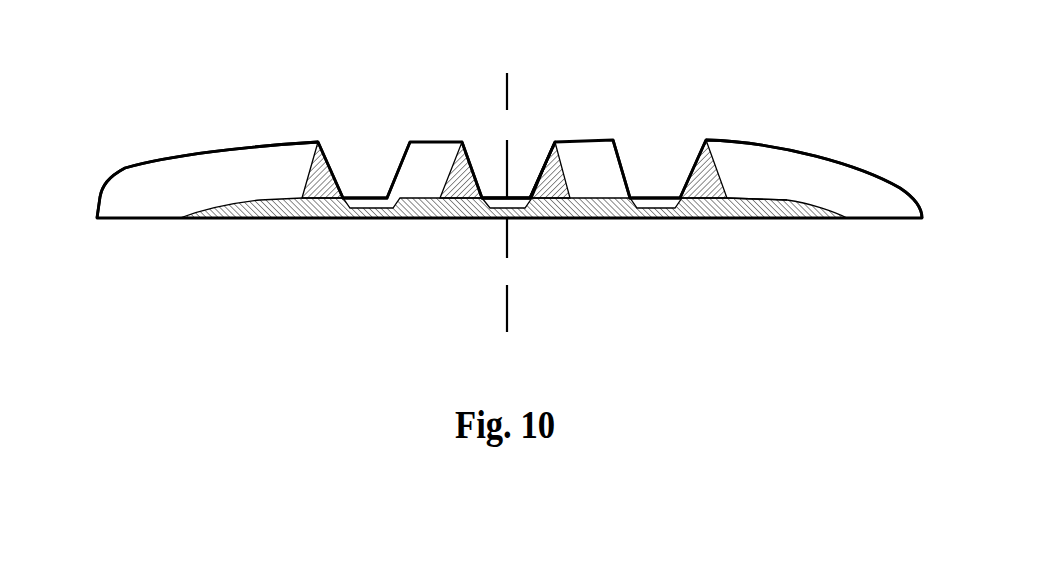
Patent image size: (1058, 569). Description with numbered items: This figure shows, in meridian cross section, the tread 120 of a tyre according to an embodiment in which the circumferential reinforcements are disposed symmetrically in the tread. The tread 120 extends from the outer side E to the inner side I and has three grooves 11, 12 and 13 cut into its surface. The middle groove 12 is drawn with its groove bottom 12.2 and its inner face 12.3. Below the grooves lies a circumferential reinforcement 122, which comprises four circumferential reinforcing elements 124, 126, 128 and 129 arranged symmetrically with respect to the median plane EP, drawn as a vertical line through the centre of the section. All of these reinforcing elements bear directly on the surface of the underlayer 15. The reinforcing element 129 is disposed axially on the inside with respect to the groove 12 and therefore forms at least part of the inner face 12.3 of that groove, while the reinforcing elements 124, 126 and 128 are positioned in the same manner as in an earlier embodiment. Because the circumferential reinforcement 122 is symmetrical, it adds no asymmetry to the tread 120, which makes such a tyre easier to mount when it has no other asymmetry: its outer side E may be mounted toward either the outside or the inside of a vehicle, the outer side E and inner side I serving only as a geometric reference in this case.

The tread 120 is at (178, 110).
The outer side E is at (145, 150).
The inner side I is at (896, 149).
The groove 11 is at (358, 178).
The groove 12 is at (499, 180).
The groove bottom 12.2 is at (508, 196).
The inner face 12.3 is at (542, 156).
The groove 13 is at (664, 178).
The median plane EP is at (487, 190).
The circumferential reinforcement 122 is at (330, 238).
The circumferential reinforcing element 126 is at (318, 170).
The circumferential reinforcing element 124 is at (458, 205).
The circumferential reinforcing element 129 is at (557, 190).
The circumferential reinforcing element 128 is at (707, 185).
The underlayer 15 is at (718, 203).